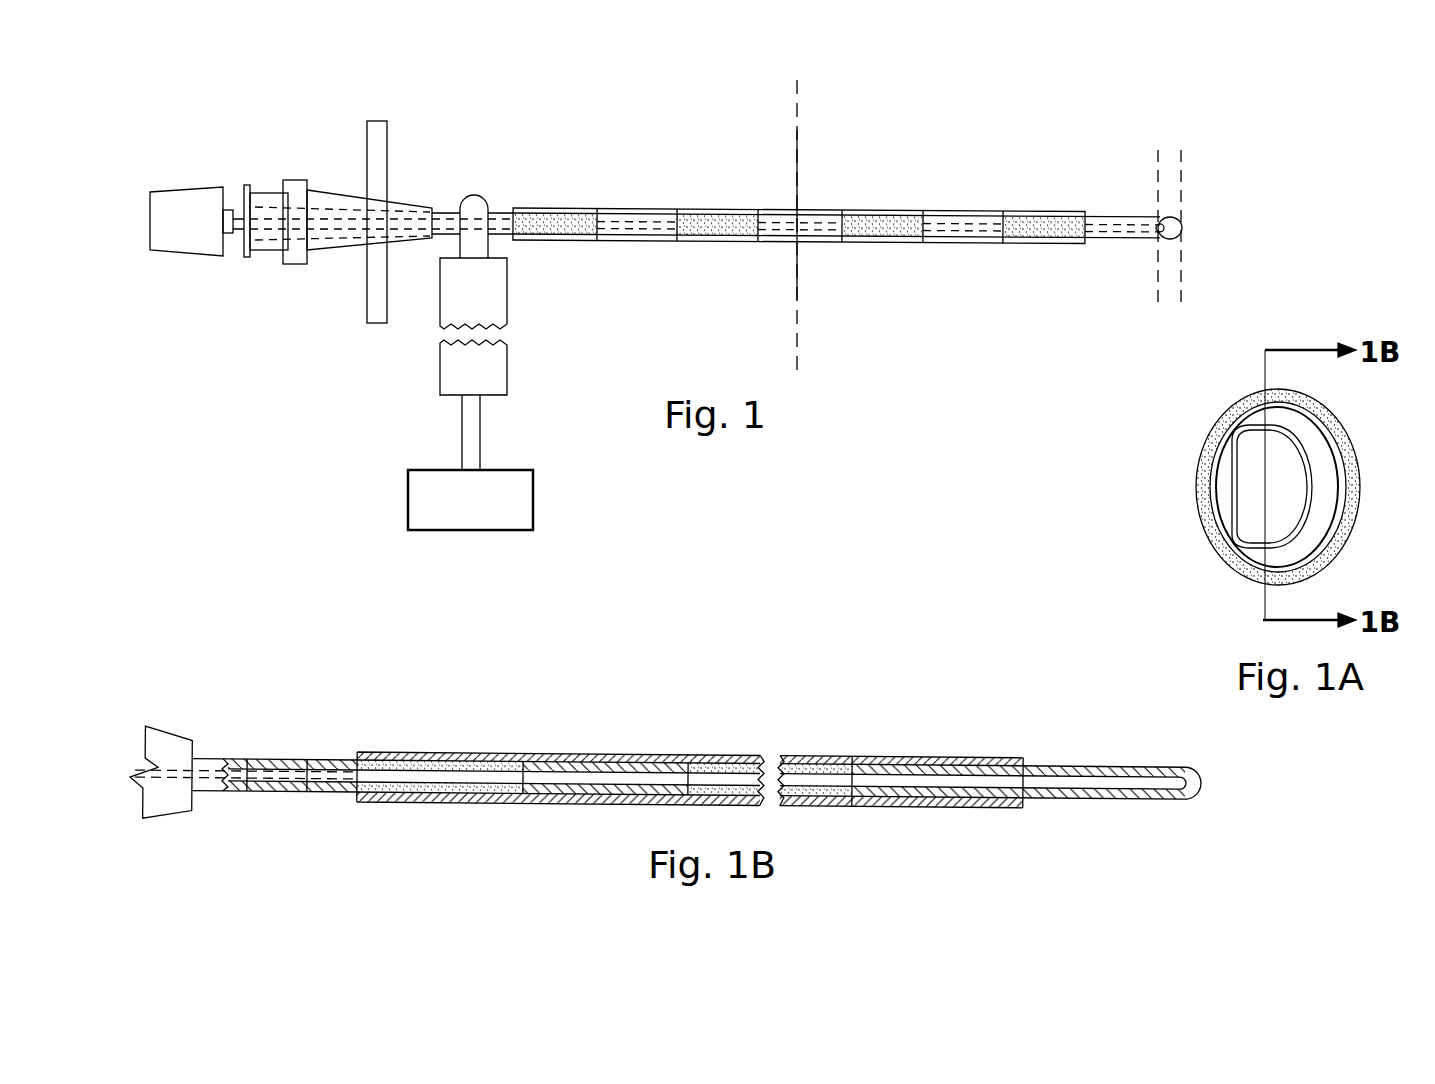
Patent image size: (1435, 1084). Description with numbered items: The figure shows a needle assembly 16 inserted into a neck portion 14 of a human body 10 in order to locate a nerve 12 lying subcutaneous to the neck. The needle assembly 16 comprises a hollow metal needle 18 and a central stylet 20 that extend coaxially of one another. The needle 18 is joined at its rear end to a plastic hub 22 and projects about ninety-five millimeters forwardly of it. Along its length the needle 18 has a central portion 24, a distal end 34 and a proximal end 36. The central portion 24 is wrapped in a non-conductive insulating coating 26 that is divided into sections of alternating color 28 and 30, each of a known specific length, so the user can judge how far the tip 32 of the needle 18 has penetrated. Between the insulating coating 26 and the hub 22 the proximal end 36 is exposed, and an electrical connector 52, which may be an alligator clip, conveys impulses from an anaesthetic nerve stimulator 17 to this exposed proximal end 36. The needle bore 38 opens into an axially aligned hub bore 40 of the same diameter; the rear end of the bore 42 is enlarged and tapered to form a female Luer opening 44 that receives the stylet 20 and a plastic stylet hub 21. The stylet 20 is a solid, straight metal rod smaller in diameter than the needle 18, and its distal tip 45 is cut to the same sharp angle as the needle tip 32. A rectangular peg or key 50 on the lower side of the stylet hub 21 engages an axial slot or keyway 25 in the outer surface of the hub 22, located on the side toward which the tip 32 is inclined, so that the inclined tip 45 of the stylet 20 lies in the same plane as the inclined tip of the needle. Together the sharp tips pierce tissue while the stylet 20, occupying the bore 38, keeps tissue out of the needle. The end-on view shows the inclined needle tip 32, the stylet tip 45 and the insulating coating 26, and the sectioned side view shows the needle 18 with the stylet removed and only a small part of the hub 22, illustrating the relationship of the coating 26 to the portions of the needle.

In FIG. 1, the human body 10 is at (858, 65).
In FIG. 1, the nerve 12 is at (1186, 175).
In FIG. 1, the neck portion 14 is at (788, 132).
In FIG. 1, the needle assembly 16 is at (636, 107).
In FIG. 1, the anaesthetic nerve stimulator 17 is at (533, 497).
In FIG. 1, the needle 18 is at (963, 243).
In FIG. 1A, the needle 18 is at (1332, 425).
In FIG. 1B, the needle 18 is at (655, 755).
In FIG. 1, the stylet 20 is at (236, 196).
In FIG. 1, the stylet hub 21 is at (176, 240).
In FIG. 1, the hub 22 is at (425, 200).
In FIG. 1B, the hub 22 is at (140, 745).
In FIG. 1, the central portion 24 is at (818, 212).
In FIG. 1, the slot or keyway 25 is at (268, 198).
In FIG. 1, the insulating coating 26 is at (1031, 212).
In FIG. 1A, the insulating coating 26 is at (1340, 548).
In FIG. 1B, the insulating coating 26 is at (918, 755).
In FIG. 1, the colored section 28 is at (705, 228).
In FIG. 1, the colored section 30 is at (630, 230).
In FIG. 1A, the tip of the needle 32 is at (1255, 424).
In FIG. 1, the distal end 34 is at (1118, 240).
In FIG. 1B, the distal end 34 is at (1112, 803).
In FIG. 1, the proximal end 36 is at (499, 200).
In FIG. 1B, the proximal end 36 is at (330, 756).
In FIG. 1, the needle bore 38 is at (1130, 228).
In FIG. 1B, the needle bore 38 is at (580, 760).
In FIG. 1, the hub bore 40 is at (412, 200).
In FIG. 1, the rear end of the bore 42 is at (322, 250).
In FIG. 1, the female Luer opening 44 is at (260, 245).
In FIG. 1A, the distal tip of the stylet 45 is at (1246, 514).
In FIG. 1, the peg or key 50 is at (232, 238).
In FIG. 1, the electrical connector 52 is at (508, 295).